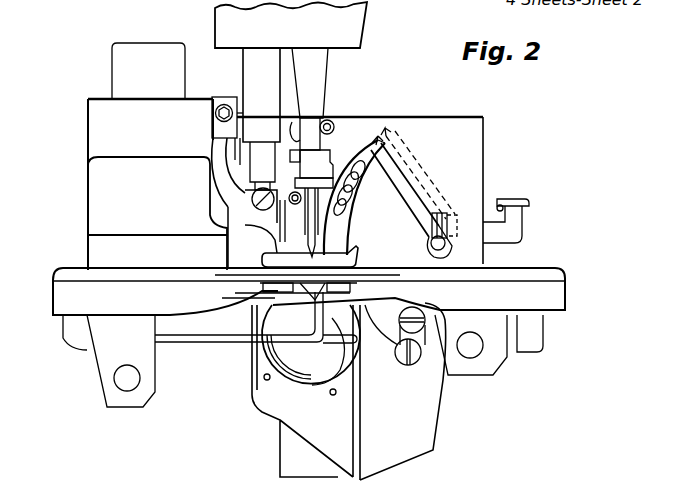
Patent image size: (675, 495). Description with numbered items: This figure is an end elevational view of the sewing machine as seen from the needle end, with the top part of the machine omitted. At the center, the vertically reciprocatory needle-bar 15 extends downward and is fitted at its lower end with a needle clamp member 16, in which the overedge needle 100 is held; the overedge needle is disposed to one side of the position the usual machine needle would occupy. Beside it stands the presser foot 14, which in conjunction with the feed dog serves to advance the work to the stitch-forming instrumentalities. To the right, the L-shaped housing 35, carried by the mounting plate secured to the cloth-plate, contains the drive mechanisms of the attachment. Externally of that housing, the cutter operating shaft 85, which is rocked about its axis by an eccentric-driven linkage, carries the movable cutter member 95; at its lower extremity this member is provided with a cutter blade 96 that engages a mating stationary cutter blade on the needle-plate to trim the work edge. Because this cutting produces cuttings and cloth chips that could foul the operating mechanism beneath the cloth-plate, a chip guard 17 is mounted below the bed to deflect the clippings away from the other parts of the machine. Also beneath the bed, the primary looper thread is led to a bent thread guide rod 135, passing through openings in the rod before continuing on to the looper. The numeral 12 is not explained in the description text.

The needle 12 is at (310, 244).
The presser foot 14 is at (270, 246).
The needle-bar 15 is at (312, 135).
The needle clamp member 16 is at (320, 162).
The chip guard 17 is at (420, 415).
The L-shaped housing 35 is at (483, 136).
The cutter operating shaft 85 is at (445, 245).
The movable cutter member 95 is at (398, 188).
The cutter blade 96 is at (340, 240).
The overedge needle 100 is at (347, 217).
The bent thread guide rod 135 is at (200, 343).